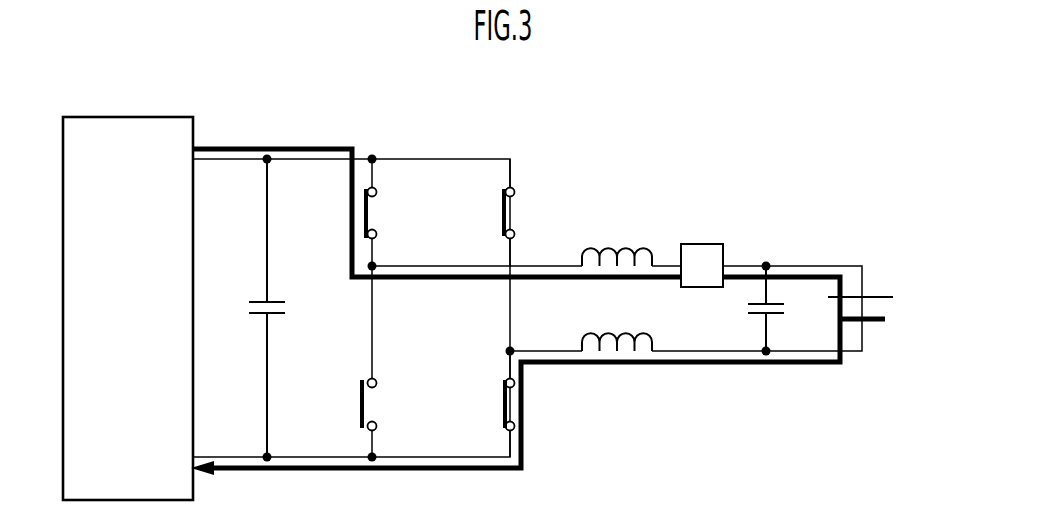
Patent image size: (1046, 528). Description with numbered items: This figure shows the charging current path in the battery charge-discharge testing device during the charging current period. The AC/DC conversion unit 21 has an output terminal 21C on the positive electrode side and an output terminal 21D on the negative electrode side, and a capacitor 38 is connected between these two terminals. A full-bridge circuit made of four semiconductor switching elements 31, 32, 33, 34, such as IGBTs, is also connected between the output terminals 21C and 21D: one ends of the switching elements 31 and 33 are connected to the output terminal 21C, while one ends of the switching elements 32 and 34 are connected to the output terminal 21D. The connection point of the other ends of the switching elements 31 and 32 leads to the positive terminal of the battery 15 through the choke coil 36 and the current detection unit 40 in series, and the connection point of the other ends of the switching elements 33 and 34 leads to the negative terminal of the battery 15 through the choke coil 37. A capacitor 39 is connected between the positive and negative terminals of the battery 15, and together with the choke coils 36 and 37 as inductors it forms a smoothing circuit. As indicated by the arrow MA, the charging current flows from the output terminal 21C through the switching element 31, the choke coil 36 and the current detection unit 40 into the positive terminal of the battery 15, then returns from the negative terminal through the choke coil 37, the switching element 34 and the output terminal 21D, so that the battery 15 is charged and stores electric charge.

The AC/DC conversion unit 21 is at (147, 117).
The arrow MA is at (229, 148).
The output terminal 21C is at (194, 161).
The output terminal 21D is at (194, 455).
The capacitor 38 is at (255, 303).
The semiconductor switching element 31 is at (371, 216).
The semiconductor switching element 32 is at (380, 397).
The semiconductor switching element 33 is at (503, 190).
The semiconductor switching element 34 is at (505, 387).
The choke coil 36 is at (623, 248).
The choke coil 37 is at (612, 353).
The capacitor 39 is at (748, 305).
The current detection unit 40 is at (709, 244).
The battery 15 is at (882, 309).